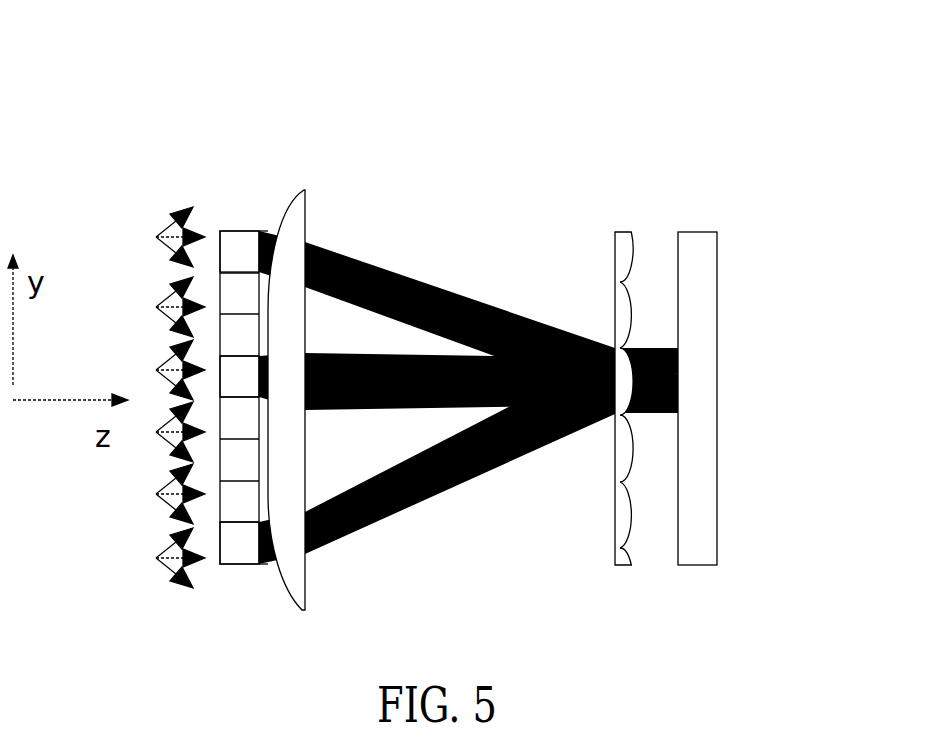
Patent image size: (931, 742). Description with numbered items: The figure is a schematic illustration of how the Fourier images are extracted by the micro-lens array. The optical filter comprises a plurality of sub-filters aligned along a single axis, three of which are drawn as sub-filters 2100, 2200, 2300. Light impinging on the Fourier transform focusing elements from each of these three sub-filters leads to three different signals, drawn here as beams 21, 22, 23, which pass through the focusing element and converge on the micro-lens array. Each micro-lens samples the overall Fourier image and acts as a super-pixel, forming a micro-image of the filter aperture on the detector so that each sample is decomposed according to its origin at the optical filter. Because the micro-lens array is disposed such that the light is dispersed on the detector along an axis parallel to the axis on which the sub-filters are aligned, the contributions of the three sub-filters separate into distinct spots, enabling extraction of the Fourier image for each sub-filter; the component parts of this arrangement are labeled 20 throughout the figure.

The display device 20 is at (116, 111).
The sub-filter 2100 is at (235, 238).
The sub-filter 2200 is at (233, 379).
The sub-filter 2300 is at (240, 547).
The first light beam 21 is at (362, 280).
The second light beam 22 is at (427, 360).
The third light beam 23 is at (420, 502).